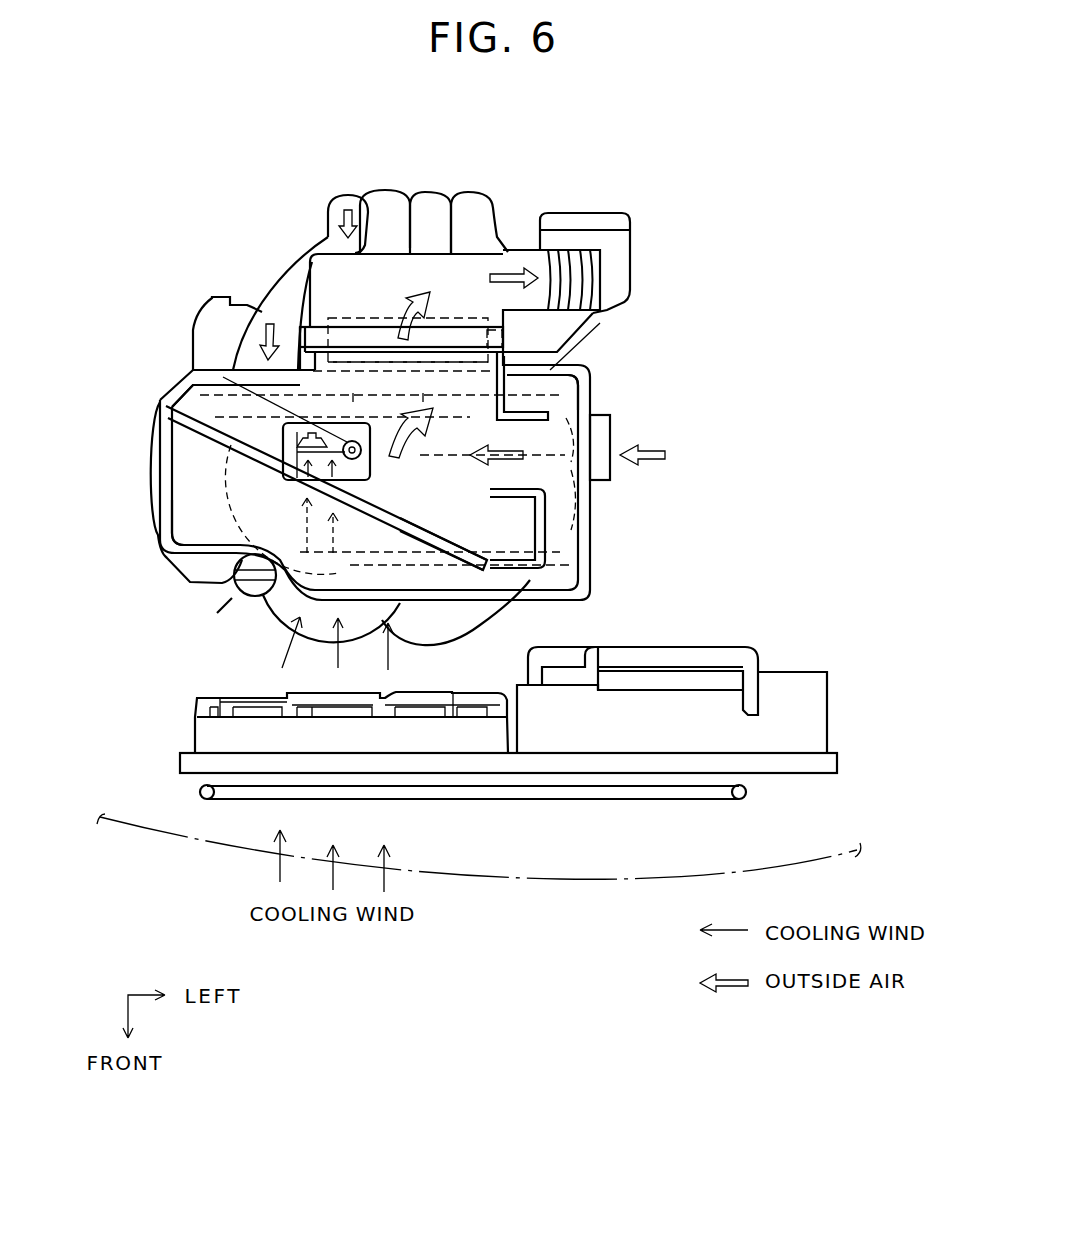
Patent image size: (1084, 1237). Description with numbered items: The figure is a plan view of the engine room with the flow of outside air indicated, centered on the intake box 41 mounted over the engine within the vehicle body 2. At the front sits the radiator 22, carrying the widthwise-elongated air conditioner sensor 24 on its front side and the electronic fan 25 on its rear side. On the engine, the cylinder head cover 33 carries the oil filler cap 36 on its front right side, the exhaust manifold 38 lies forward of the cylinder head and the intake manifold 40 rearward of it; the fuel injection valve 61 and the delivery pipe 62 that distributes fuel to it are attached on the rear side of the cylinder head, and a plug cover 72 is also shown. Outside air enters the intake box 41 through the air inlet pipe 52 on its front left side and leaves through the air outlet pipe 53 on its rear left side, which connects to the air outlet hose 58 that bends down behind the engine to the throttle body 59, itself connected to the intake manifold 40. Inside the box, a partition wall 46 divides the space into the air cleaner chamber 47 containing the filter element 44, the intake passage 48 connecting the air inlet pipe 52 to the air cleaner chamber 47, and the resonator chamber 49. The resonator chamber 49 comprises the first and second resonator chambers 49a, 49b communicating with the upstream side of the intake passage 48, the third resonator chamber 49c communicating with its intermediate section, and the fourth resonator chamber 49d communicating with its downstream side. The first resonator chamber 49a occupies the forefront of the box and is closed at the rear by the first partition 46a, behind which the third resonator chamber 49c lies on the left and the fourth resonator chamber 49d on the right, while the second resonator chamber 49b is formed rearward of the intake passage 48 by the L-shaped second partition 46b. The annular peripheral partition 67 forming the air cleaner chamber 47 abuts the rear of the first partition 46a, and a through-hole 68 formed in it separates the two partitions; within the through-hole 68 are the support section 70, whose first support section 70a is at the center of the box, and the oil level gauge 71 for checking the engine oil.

The vehicle body 2 is at (138, 830).
The radiator 22 is at (180, 760).
The air conditioner sensor 24 is at (200, 792).
The electronic fan 25 is at (193, 730).
The cylinder head cover 33 is at (187, 567).
The oil filler cap 36 is at (240, 600).
The exhaust manifold 38 is at (513, 612).
The intake manifold 40 is at (470, 207).
The intake box 41 is at (608, 556).
The filter element 44 is at (335, 317).
The partition wall 46 is at (387, 578).
The first partition 46a is at (547, 503).
The second partition 46b is at (547, 413).
The air cleaner chamber 47 is at (520, 382).
The intake passage 48 is at (540, 438).
The resonator chamber 49 is at (190, 473).
The first resonator chamber 49a is at (193, 517).
The second resonator chamber 49b is at (560, 375).
The third resonator chamber 49c is at (500, 525).
The fourth resonator chamber 49d is at (217, 407).
The air inlet pipe 52 is at (602, 442).
The air outlet pipe 53 is at (547, 277).
The air outlet hose 58 is at (585, 292).
The throttle body 59 is at (590, 237).
The fuel injection valve 61 is at (223, 377).
The delivery pipe 62 is at (600, 323).
The peripheral partition 67 is at (405, 530).
The through-hole 68 is at (283, 452).
The support section 70 is at (352, 448).
The first support section 70a is at (352, 440).
The oil level gauge 71 is at (250, 432).
The plug cover 72 is at (233, 497).